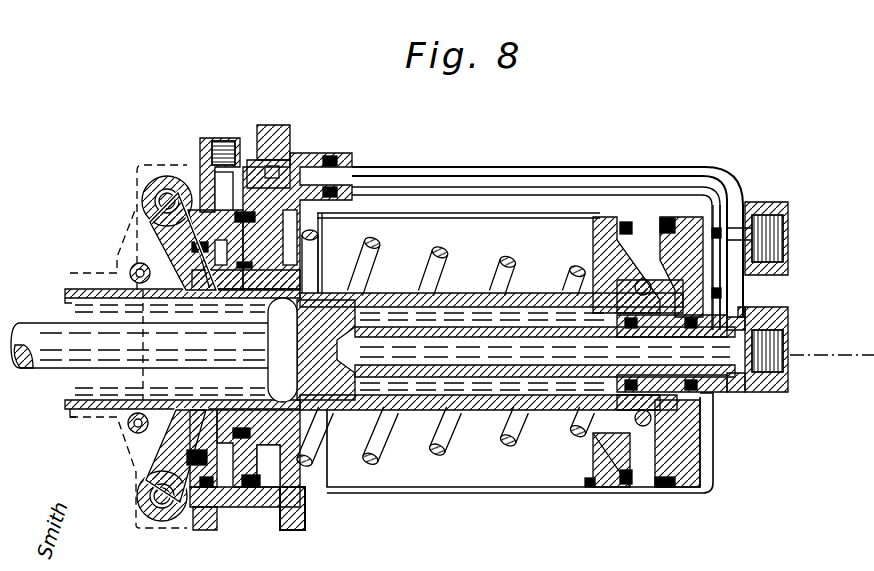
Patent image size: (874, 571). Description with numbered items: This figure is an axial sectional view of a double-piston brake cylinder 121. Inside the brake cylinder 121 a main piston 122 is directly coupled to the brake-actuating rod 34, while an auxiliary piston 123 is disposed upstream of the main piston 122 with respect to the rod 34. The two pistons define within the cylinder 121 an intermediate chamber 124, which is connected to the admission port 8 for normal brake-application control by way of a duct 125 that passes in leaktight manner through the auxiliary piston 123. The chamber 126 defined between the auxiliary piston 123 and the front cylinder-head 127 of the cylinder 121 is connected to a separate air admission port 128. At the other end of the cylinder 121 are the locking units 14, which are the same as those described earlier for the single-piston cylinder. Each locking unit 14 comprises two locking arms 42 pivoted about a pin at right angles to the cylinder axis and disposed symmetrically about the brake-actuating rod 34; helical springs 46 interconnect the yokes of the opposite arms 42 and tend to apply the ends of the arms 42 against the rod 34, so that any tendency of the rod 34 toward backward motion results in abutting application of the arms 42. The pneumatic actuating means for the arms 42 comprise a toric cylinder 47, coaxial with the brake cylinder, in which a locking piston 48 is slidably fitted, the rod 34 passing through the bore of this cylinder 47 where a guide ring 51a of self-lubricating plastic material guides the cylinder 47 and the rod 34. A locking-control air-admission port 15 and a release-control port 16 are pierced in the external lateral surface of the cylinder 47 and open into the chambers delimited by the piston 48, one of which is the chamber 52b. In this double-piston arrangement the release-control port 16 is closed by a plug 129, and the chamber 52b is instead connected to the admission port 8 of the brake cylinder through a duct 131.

The admission port 8 is at (792, 355).
The locking units 14 is at (133, 161).
The locking-control air-admission port 15 is at (212, 136).
The release-control port 16 is at (305, 146).
The brake-actuating rod 34 is at (93, 290).
The locking arms 42 is at (158, 250).
The helical springs 46 is at (140, 338).
The cylinder 47 is at (238, 510).
The locking piston 48 is at (257, 488).
The seal 51a is at (224, 500).
The chamber 52b is at (273, 472).
The brake cylinder 121 is at (446, 497).
The main piston 122 is at (615, 490).
The auxiliary piston 123 is at (712, 487).
The intermediate chamber 124 is at (537, 392).
The duct 125 is at (473, 368).
The chamber 126 is at (703, 458).
The front cylinder-head 127 is at (716, 430).
The air admission port 128 is at (790, 245).
The plug 129 is at (281, 122).
The duct 131 is at (596, 176).